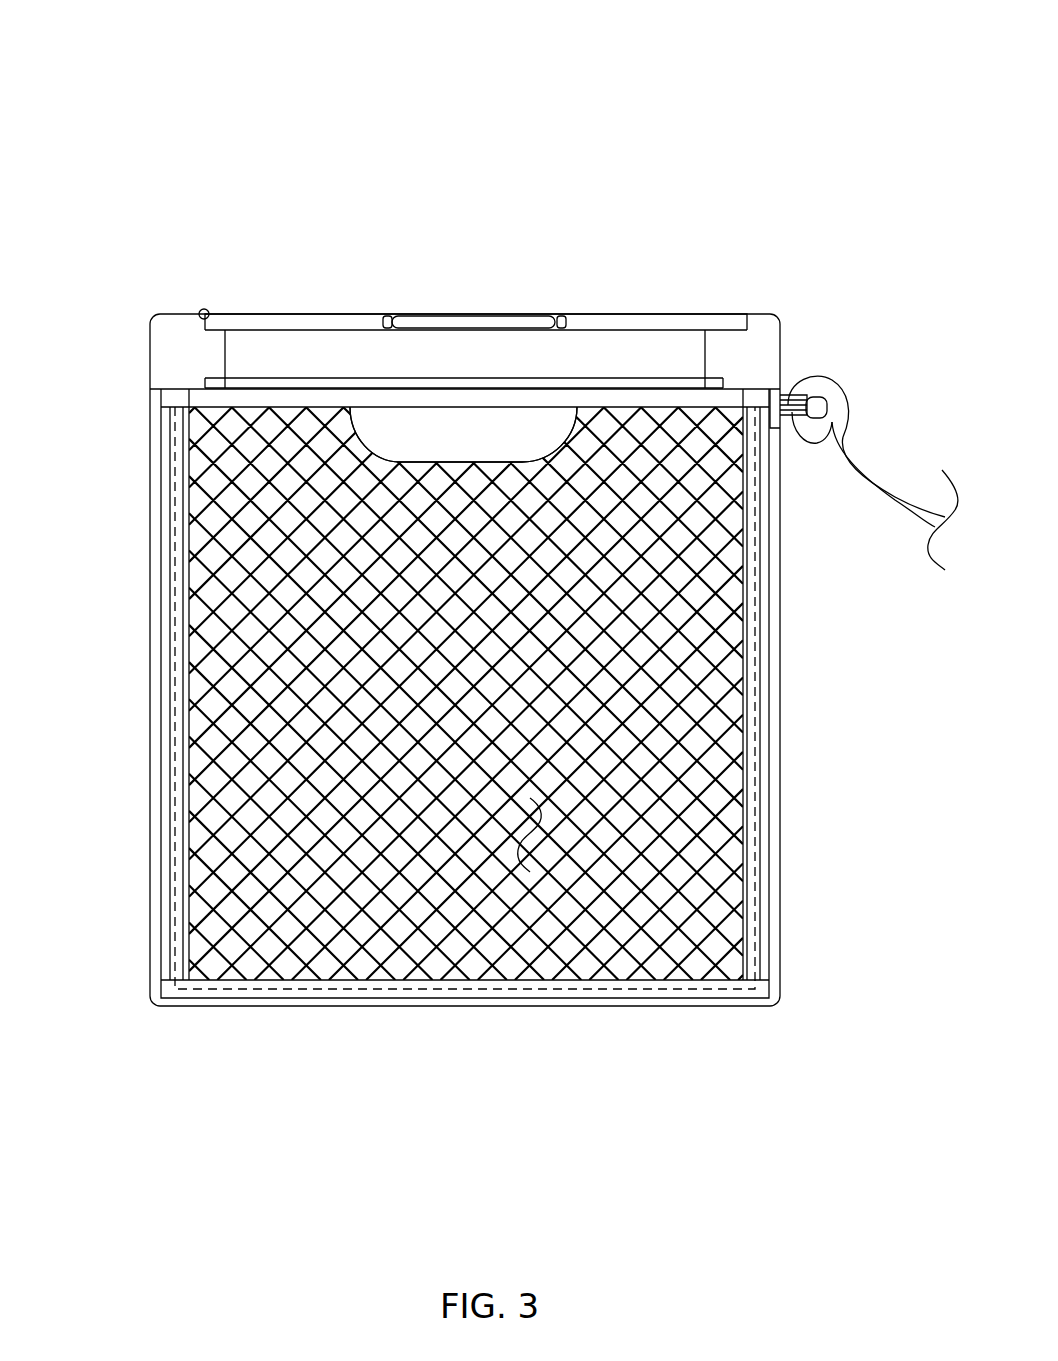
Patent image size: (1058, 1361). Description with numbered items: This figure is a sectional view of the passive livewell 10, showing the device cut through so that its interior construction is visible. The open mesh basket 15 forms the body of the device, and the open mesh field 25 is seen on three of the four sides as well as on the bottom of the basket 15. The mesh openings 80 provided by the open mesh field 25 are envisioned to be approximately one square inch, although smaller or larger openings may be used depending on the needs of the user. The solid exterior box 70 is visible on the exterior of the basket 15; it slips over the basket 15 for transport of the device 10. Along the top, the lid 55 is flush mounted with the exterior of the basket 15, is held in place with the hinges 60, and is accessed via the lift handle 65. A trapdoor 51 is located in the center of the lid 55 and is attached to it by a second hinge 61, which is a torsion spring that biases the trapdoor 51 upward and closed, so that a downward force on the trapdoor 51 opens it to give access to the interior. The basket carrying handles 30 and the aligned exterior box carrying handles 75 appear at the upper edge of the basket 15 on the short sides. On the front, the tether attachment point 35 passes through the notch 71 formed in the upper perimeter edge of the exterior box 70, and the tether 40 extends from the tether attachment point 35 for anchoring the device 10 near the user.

The passive livewell 10 is at (122, 168).
The open mesh basket 15 is at (185, 345).
The open mesh field 25 is at (756, 625).
The basket carrying handles 30 is at (490, 425).
The tether attachment point 35 is at (800, 407).
The tether 40 is at (842, 400).
The trapdoor 51 is at (440, 322).
The lid 55 is at (285, 322).
The first hinges 60 is at (207, 310).
The second hinge 61 is at (388, 318).
The lift handle 65 is at (735, 322).
The solid exterior box 70 is at (158, 397).
The notch 71 is at (775, 390).
The exterior box carrying handles 75 is at (490, 425).
The mesh openings 80 is at (520, 840).